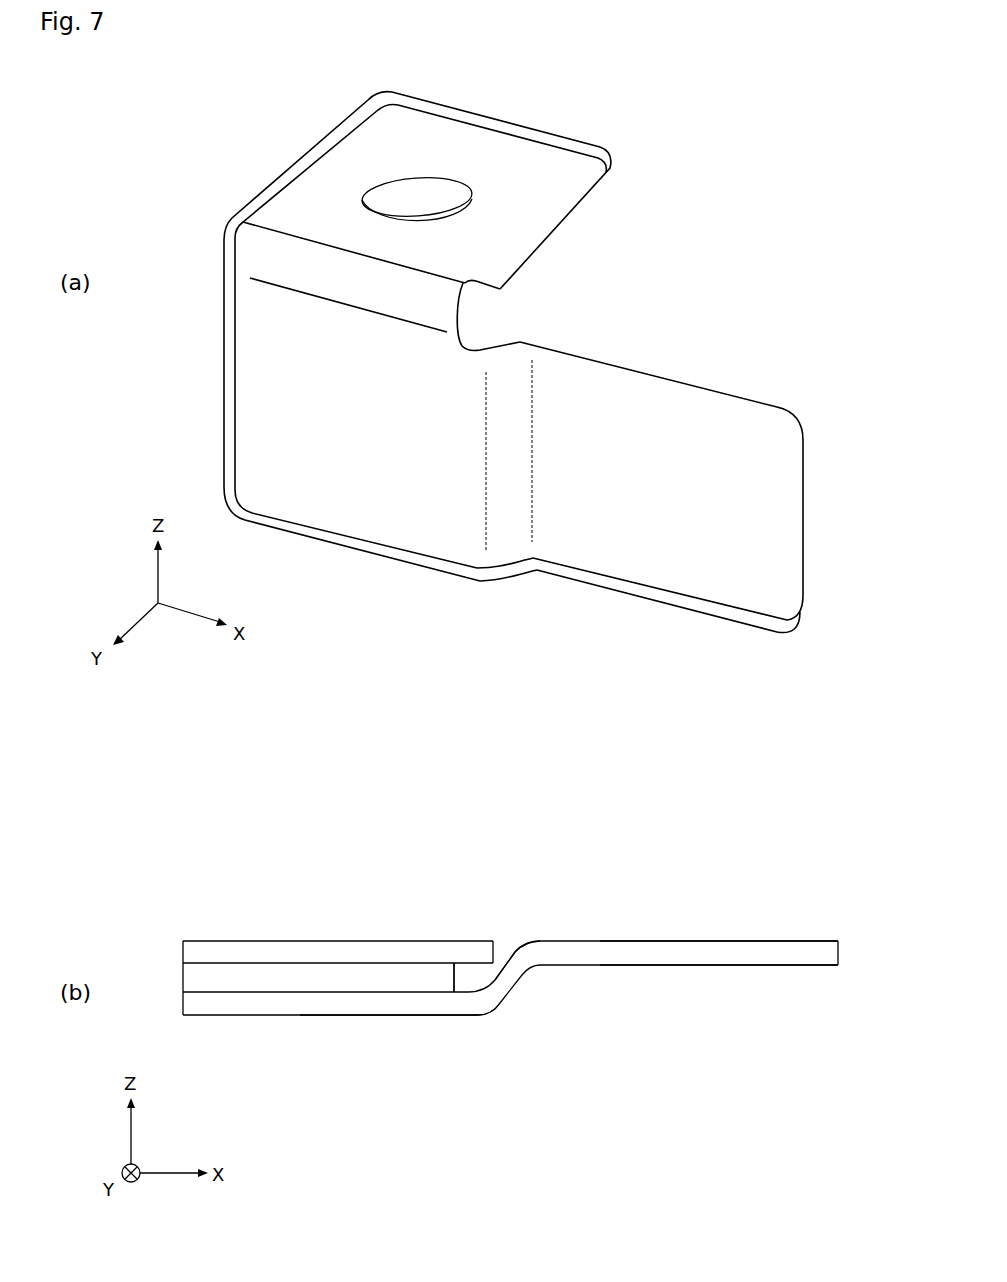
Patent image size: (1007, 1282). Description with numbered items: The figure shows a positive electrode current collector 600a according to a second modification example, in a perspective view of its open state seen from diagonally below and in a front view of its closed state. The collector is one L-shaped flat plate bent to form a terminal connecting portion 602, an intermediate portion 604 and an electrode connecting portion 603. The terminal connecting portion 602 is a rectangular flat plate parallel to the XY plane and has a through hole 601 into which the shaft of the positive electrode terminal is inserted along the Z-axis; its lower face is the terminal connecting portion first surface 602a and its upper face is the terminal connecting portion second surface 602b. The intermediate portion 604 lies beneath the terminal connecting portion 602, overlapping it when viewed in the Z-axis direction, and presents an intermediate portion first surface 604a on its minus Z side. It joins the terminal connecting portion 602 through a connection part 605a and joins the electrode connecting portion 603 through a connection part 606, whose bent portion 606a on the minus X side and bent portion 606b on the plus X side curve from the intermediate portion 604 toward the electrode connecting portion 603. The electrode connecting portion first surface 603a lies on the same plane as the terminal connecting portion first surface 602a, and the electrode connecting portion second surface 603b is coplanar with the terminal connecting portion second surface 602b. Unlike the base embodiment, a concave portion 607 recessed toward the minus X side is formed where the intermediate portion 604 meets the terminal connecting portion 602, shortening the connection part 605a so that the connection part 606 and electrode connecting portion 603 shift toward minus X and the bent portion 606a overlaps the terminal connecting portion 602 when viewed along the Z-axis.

The positive electrode current collector 600a is at (742, 828).
The through hole 601 is at (377, 187).
The terminal connecting portion 602 is at (502, 122).
The terminal connecting portion first surface 602a is at (200, 967).
The terminal connecting portion second surface 602b is at (383, 940).
The electrode connecting portion 603 is at (683, 380).
The electrode connecting portion first surface 603a is at (732, 967).
The electrode connecting portion second surface 603b is at (743, 940).
The intermediate portion 604 is at (222, 380).
The intermediate portion first surface 604a is at (410, 1017).
The connection part 605a is at (240, 243).
The connection part 606 is at (508, 575).
The bent portion 606a is at (482, 582).
The bent portion 606b is at (537, 348).
The concave portion 607 is at (462, 320).